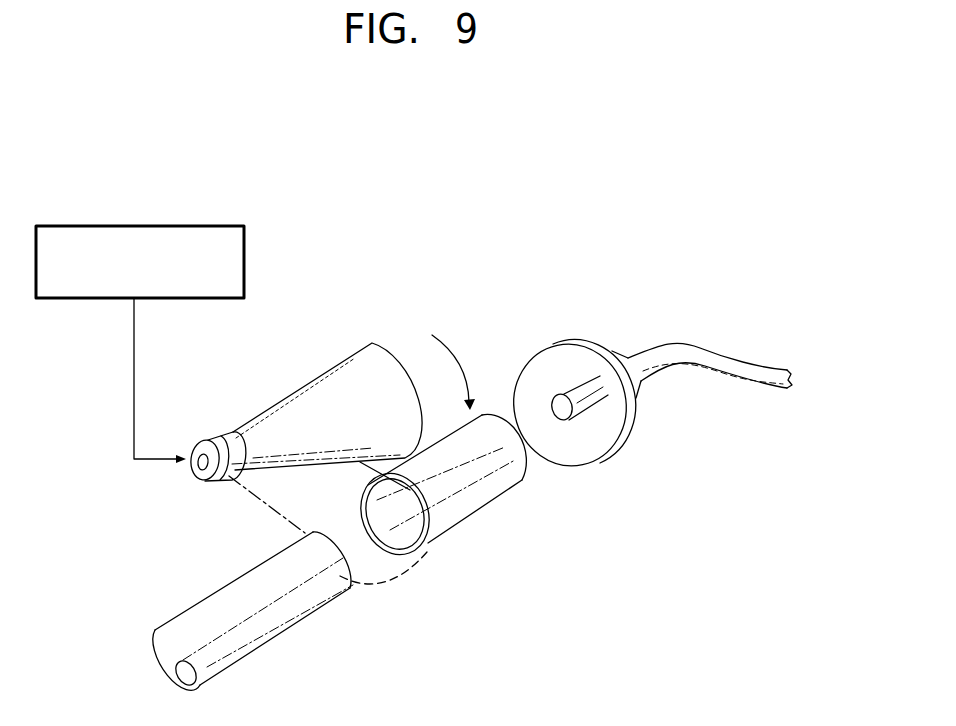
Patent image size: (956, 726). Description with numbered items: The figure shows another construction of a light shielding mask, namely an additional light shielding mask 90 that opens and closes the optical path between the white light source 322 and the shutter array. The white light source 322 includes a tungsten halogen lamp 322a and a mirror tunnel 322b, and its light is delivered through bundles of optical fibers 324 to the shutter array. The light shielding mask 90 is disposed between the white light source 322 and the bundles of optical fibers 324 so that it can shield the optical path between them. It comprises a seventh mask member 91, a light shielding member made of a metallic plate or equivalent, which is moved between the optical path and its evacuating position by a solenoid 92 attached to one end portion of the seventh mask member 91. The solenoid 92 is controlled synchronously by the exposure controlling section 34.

The exposure controlling section 34 is at (237, 203).
The light shielding mask 90 is at (286, 400).
The seventh mask member 91 is at (382, 358).
The solenoid 92 is at (193, 475).
The white light source 322 is at (571, 429).
The tungsten halogen lamp 322a is at (580, 390).
The mirror tunnel 322b is at (497, 428).
The bundles of optical fibers 324 is at (310, 603).